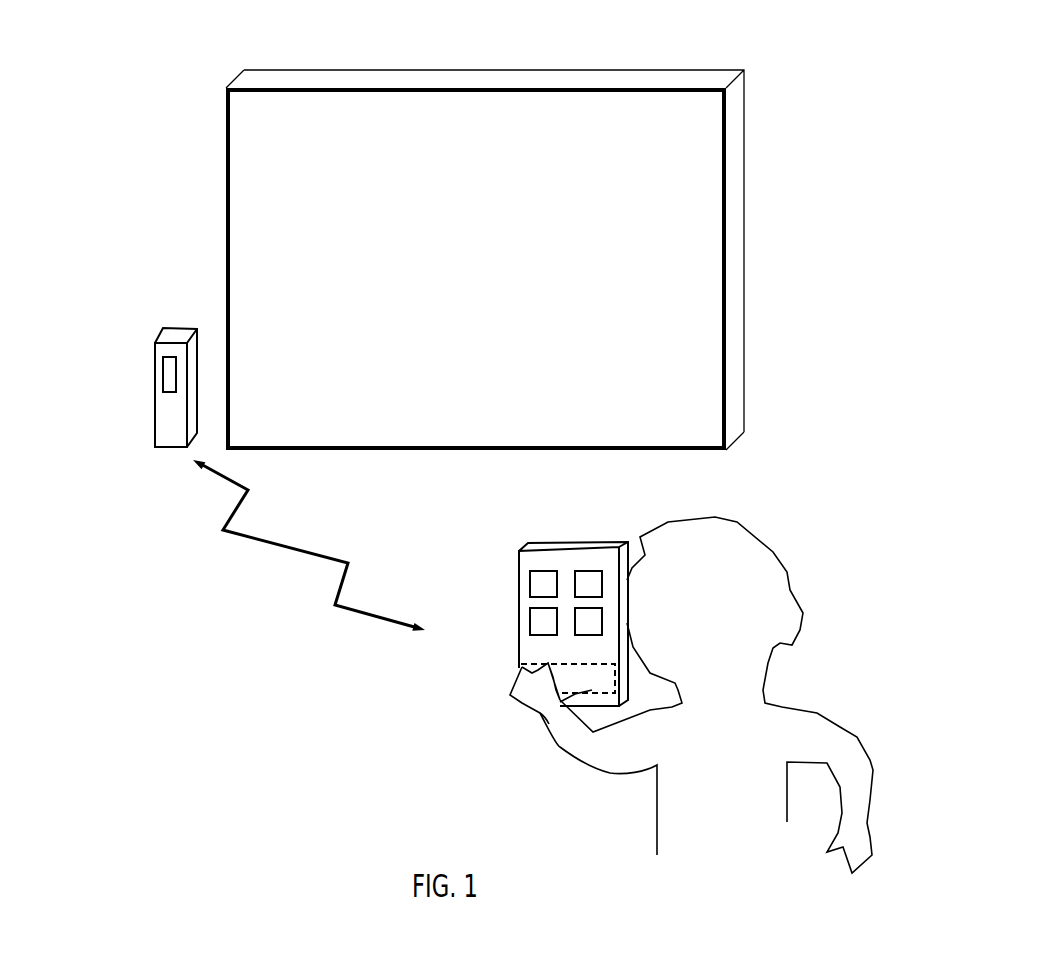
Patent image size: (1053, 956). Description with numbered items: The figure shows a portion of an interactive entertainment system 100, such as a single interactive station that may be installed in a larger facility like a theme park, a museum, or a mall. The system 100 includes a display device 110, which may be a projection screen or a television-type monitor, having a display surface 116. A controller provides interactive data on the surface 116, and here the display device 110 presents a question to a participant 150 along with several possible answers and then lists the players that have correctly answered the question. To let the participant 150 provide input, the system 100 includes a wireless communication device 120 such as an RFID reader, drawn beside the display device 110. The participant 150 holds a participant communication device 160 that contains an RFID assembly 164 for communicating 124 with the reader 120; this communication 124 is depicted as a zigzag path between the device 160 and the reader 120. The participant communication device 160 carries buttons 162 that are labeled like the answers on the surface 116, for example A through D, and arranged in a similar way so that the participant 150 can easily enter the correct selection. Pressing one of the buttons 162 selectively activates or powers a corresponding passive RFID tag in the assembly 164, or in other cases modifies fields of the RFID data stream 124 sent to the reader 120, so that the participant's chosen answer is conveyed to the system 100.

The interactive entertainment system 100 is at (955, 60).
The display device 110 is at (743, 241).
The display surface 116 is at (540, 105).
The wireless communication device 120 is at (155, 400).
The RFID data stream 124 is at (282, 547).
The participant 150 is at (754, 759).
The participant communication device 160 is at (538, 548).
The buttons 162 is at (526, 620).
The RFID assembly 164 is at (549, 724).